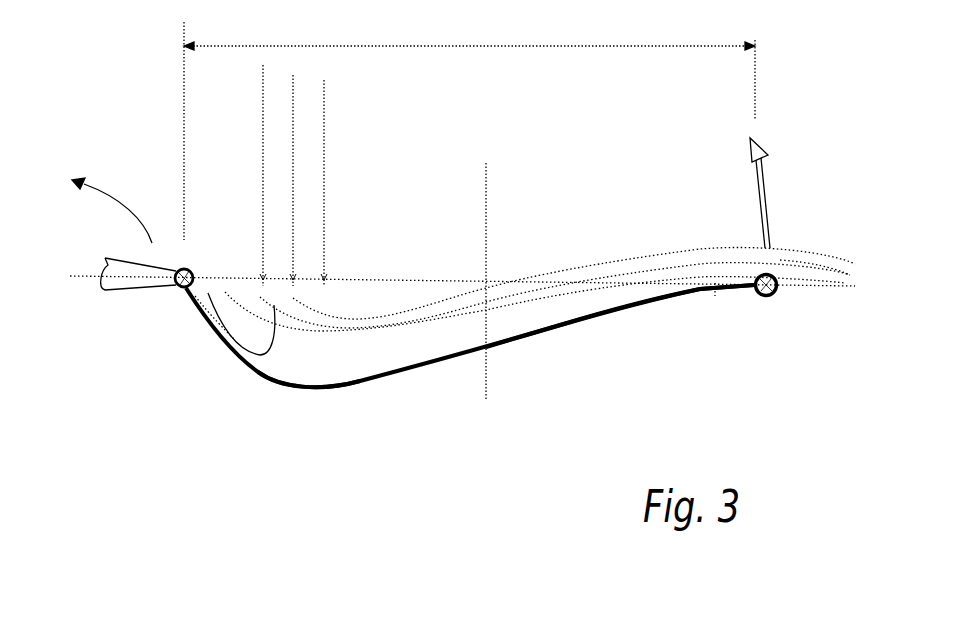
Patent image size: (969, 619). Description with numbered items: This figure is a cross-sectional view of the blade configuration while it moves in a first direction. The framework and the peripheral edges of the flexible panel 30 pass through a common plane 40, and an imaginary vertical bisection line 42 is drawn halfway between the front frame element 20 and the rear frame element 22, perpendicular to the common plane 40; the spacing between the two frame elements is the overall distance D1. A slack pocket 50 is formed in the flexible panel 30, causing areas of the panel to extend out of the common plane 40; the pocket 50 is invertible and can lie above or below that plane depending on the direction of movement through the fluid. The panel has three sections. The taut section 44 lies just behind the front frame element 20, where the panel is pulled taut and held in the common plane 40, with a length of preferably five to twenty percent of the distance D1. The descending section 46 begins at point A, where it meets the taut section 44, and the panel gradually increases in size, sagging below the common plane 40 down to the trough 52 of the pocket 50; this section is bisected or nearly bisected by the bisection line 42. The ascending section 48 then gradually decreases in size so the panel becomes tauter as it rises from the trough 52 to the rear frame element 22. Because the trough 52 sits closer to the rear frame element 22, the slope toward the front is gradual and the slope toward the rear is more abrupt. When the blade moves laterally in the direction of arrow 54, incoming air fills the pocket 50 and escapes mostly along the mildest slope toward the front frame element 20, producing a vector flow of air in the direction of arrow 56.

The front frame element 20 is at (776, 295).
The rear frame element 22 is at (178, 291).
The flexible panel 30 is at (552, 330).
The common plane 40 is at (82, 277).
The imaginary bisection line 42 is at (487, 217).
The taut section 44 is at (713, 296).
The descending section 46 is at (317, 397).
The ascending section 48 is at (132, 298).
The slack pocket 50 is at (272, 380).
The trough 52 is at (278, 370).
The arrow 54 is at (760, 212).
The arrow 56 is at (815, 262).
The point A is at (715, 283).
The overall distance D1 is at (469, 131).